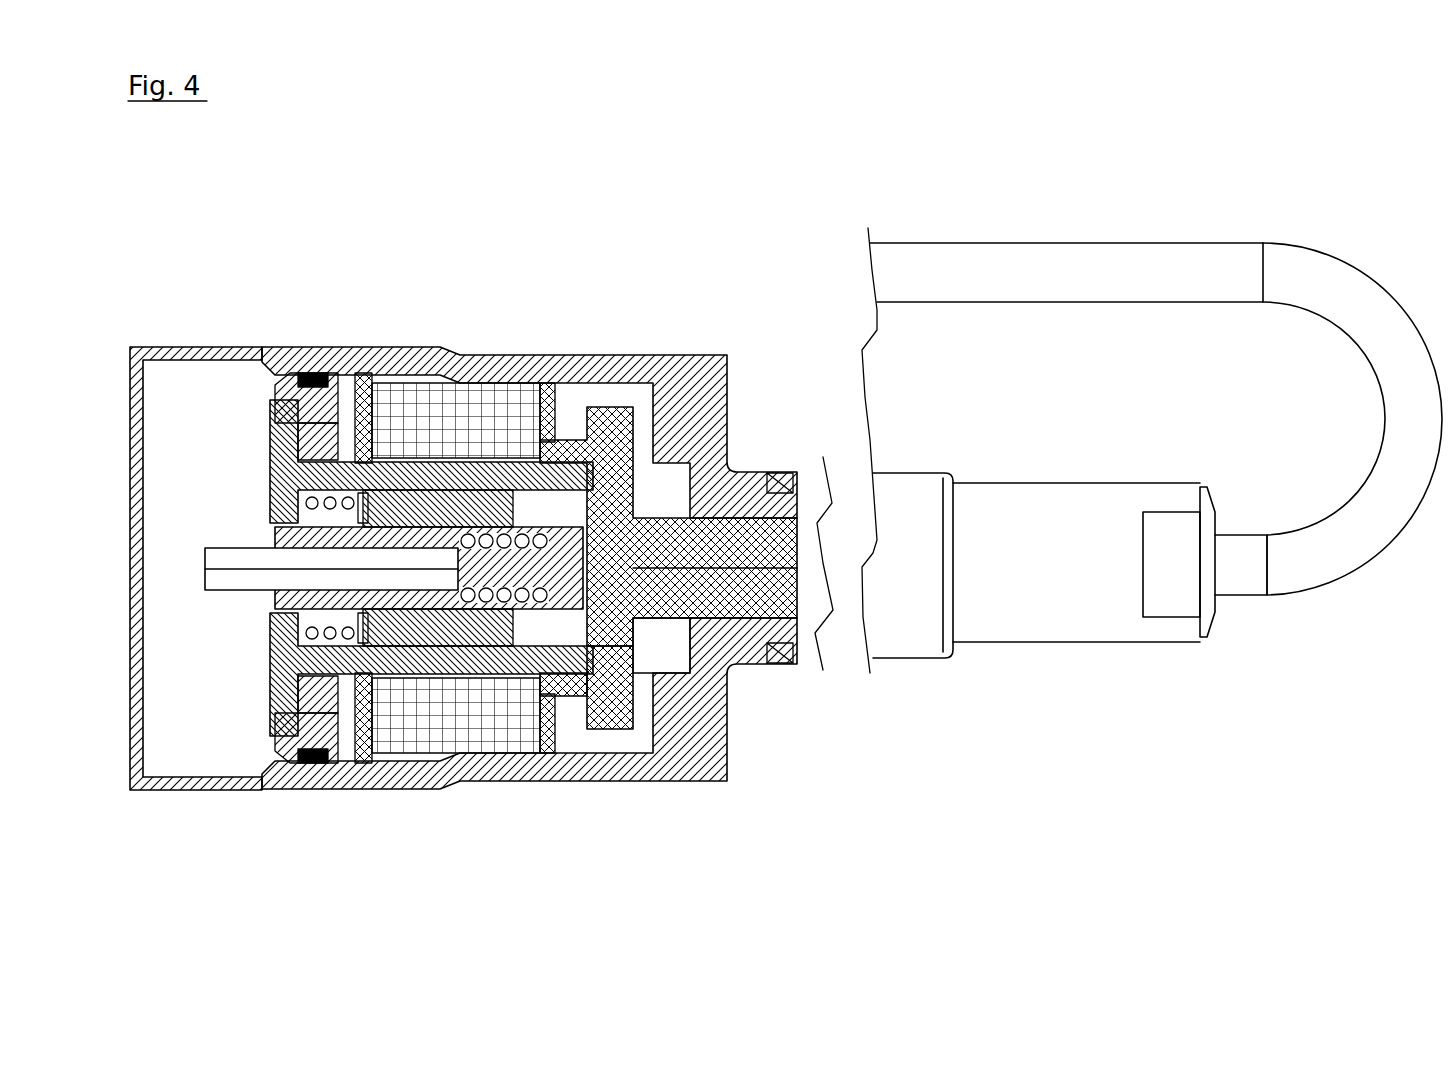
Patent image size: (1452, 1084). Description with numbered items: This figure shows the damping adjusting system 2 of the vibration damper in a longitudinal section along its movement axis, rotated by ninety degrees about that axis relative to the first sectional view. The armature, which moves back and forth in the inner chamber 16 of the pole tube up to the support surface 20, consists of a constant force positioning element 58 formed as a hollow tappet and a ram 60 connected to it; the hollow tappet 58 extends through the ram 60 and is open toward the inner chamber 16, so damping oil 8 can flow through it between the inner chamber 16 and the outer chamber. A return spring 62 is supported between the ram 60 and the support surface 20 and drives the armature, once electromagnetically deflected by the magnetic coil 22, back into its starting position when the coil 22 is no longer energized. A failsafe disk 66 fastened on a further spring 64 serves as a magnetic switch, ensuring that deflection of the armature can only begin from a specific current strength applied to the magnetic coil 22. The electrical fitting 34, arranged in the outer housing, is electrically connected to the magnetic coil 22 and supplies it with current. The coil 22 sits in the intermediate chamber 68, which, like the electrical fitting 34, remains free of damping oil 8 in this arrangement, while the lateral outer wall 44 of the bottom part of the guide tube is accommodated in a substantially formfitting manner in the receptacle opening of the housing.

The damping adjusting system 2 is at (960, 143).
The damping medium 8 is at (186, 682).
The inner chamber 16 is at (462, 512).
The support surface 20 is at (463, 621).
The magnetic coil 22 is at (512, 410).
The electrical fitting 34 is at (605, 662).
The lateral outer wall 44 is at (345, 440).
The constant force positioning element 58 is at (225, 548).
The ram 60 is at (627, 473).
The return spring 62 is at (527, 528).
The further spring 64 is at (346, 655).
The failsafe disk 66 is at (293, 708).
The intermediate chamber 68 is at (662, 647).